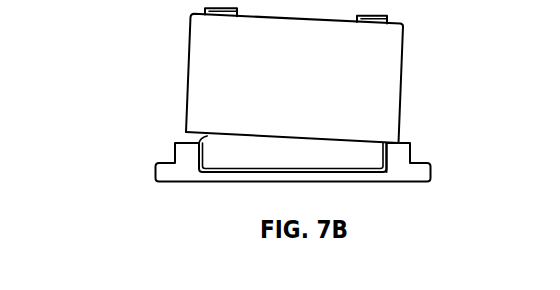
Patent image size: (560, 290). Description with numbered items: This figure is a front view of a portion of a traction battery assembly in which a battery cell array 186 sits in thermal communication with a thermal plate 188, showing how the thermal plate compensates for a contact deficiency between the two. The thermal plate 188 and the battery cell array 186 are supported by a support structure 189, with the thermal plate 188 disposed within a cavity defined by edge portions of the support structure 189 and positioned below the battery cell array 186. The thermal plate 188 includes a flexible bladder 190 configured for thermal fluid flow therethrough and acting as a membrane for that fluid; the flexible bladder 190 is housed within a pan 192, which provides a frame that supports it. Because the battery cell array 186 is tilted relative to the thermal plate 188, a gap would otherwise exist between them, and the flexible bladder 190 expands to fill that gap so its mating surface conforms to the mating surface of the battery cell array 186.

The battery cell array 186 is at (393, 58).
The thermal plate 188 is at (392, 158).
The support structure 189 is at (403, 175).
The flexible bladder 190 is at (193, 134).
The pan 192 is at (297, 173).